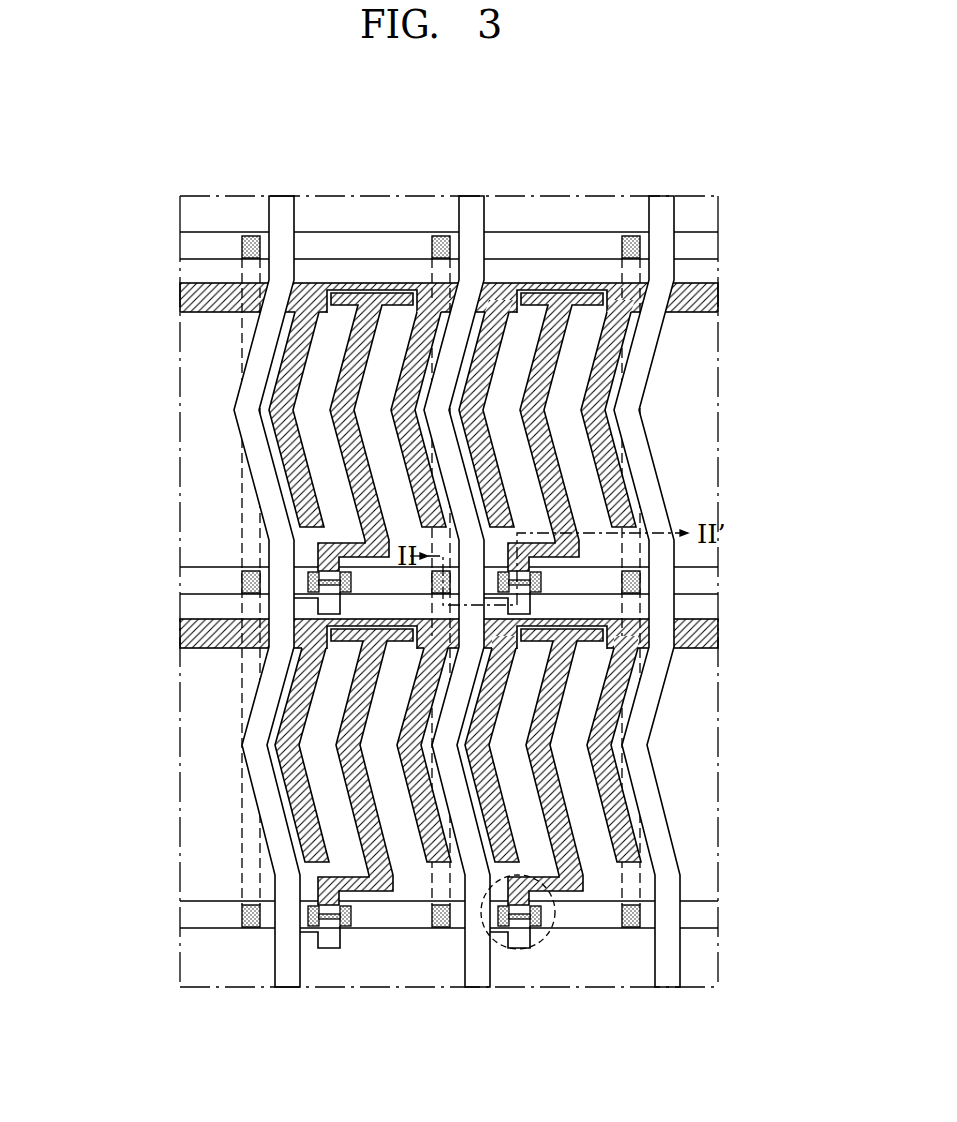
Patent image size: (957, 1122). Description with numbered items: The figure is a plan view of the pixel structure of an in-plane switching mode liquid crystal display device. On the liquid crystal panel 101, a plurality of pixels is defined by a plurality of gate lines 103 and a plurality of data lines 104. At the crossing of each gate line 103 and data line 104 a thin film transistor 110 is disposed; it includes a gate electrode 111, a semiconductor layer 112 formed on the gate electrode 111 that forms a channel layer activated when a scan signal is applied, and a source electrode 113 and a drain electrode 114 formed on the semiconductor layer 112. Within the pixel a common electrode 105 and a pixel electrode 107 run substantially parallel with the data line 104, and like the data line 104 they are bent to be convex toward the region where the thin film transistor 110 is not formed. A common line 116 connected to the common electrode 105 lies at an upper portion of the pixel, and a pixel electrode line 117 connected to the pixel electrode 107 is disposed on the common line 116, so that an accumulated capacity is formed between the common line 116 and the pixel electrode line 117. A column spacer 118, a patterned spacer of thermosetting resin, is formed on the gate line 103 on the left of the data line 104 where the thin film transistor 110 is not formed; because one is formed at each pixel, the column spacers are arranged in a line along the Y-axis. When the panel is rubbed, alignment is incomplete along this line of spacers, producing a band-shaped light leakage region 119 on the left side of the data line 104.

The liquid crystal panel 101 is at (726, 203).
The gate line 103 is at (707, 578).
The data line 104 is at (466, 210).
The common electrode 105 is at (283, 753).
The pixel electrode 107 is at (362, 812).
The thin film transistor 110 is at (518, 966).
The gate electrode 111 is at (553, 918).
The semiconductor layer 112 is at (546, 909).
The source electrode 113 is at (518, 926).
The drain electrode 114 is at (506, 905).
The common line 116 is at (183, 638).
The pixel electrode line 117 is at (613, 636).
The column spacer 118 is at (442, 924).
The light leakage region 119 is at (426, 455).